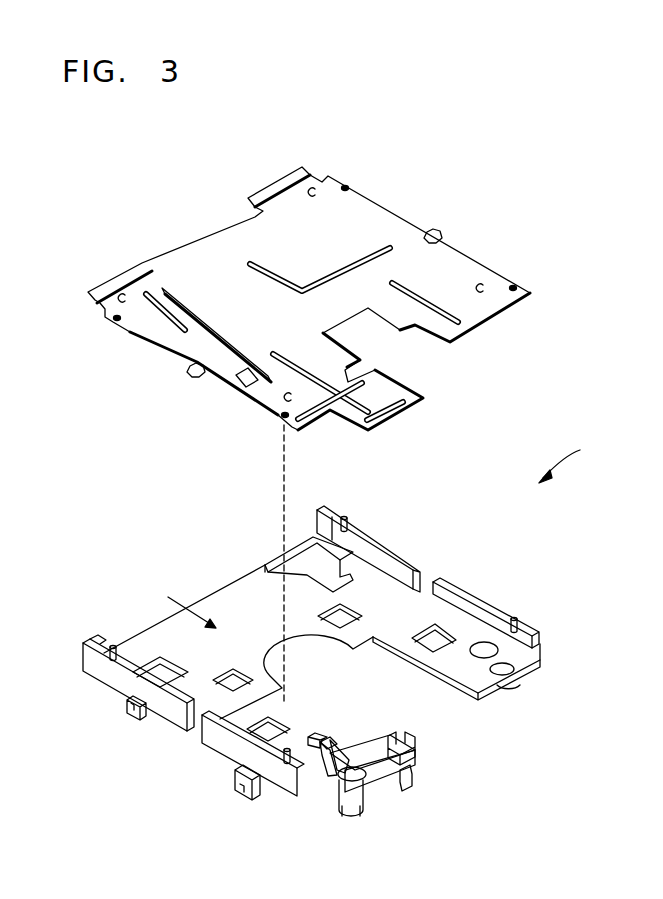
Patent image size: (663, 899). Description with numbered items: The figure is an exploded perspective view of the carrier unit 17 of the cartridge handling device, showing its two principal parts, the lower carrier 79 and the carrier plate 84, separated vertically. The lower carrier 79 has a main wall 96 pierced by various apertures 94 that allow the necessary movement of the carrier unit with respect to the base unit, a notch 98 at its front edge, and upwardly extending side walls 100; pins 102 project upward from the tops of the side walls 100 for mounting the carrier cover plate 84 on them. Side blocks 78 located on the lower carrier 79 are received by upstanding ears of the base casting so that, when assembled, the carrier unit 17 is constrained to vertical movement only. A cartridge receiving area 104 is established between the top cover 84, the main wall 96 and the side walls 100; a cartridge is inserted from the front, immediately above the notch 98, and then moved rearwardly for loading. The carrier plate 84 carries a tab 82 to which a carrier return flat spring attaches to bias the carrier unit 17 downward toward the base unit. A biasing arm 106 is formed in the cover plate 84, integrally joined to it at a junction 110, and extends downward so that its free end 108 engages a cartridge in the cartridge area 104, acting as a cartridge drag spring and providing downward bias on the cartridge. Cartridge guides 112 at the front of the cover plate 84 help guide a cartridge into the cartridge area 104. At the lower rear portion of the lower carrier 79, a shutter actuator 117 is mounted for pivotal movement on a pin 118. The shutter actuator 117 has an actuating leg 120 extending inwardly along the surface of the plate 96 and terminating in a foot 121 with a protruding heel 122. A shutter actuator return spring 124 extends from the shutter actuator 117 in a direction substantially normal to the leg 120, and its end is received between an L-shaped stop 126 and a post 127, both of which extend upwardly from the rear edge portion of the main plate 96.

The carrier unit 17 is at (569, 461).
The side blocks 78 is at (127, 706).
The lower carrier 79 is at (380, 583).
The tab 82 is at (187, 376).
The carrier plate 84 is at (165, 343).
The apertures 94 is at (435, 642).
The main wall 96 is at (233, 605).
The notch 98 is at (263, 570).
The side walls 100 is at (410, 580).
The pins 102 is at (115, 655).
The cartridge receiving area 104 is at (177, 601).
The biasing arm 106 is at (198, 337).
The free end 108 is at (240, 380).
The junction 110 is at (152, 290).
The cartridge guides 112 is at (275, 186).
The shutter actuator 117 is at (341, 808).
The pin 118 is at (352, 818).
The actuating leg 120 is at (345, 768).
The foot 121 is at (313, 735).
The heel 122 is at (329, 740).
The shutter actuator return spring 124 is at (376, 784).
The L-shaped stop 126 is at (417, 744).
The post 127 is at (413, 777).